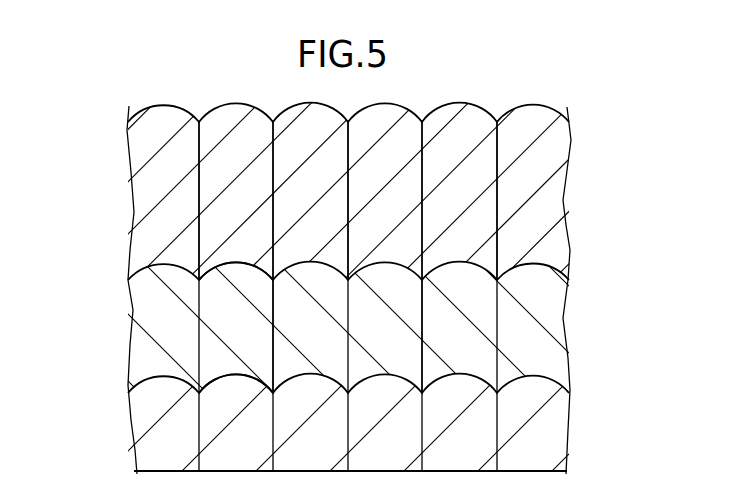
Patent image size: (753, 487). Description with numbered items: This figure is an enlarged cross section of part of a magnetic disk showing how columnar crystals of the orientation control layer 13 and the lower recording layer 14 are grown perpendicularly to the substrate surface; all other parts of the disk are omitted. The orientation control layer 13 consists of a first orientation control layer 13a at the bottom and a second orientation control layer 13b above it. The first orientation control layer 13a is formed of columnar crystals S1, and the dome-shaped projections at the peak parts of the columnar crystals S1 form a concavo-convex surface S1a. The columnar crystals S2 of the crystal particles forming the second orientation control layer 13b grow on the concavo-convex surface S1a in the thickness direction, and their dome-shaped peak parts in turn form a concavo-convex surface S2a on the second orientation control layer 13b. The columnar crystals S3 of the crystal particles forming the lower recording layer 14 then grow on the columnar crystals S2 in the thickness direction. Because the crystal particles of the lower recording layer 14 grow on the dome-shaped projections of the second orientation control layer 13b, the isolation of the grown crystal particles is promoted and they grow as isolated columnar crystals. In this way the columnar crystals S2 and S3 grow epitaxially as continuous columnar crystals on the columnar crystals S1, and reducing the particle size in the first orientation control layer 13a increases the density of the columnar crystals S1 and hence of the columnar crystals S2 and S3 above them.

The lower recording layer 14 is at (376, 191).
The orientation control layer 13 is at (348, 355).
The first orientation control layer 13a is at (342, 410).
The second orientation control layer 13b is at (339, 316).
The columnar crystals S1 is at (218, 427).
The concavo-convex surface S1a is at (237, 374).
The columnar crystals S2 is at (220, 320).
The concavo-convex surface S2a is at (237, 262).
The columnar crystals S3 is at (218, 178).